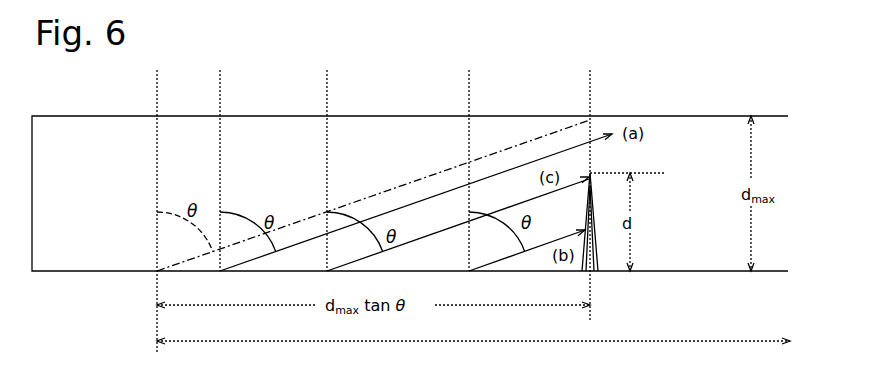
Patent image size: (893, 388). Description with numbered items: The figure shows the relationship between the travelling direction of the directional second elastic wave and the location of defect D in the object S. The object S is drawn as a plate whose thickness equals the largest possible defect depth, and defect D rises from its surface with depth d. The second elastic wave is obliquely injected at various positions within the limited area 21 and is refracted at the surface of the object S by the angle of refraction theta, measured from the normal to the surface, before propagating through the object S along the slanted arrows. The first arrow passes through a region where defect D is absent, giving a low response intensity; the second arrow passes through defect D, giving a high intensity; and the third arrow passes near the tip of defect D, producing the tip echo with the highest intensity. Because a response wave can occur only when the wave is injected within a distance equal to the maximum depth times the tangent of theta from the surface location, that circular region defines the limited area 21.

The limited area 21 is at (473, 354).
The object S is at (101, 138).
The defect D is at (597, 250).